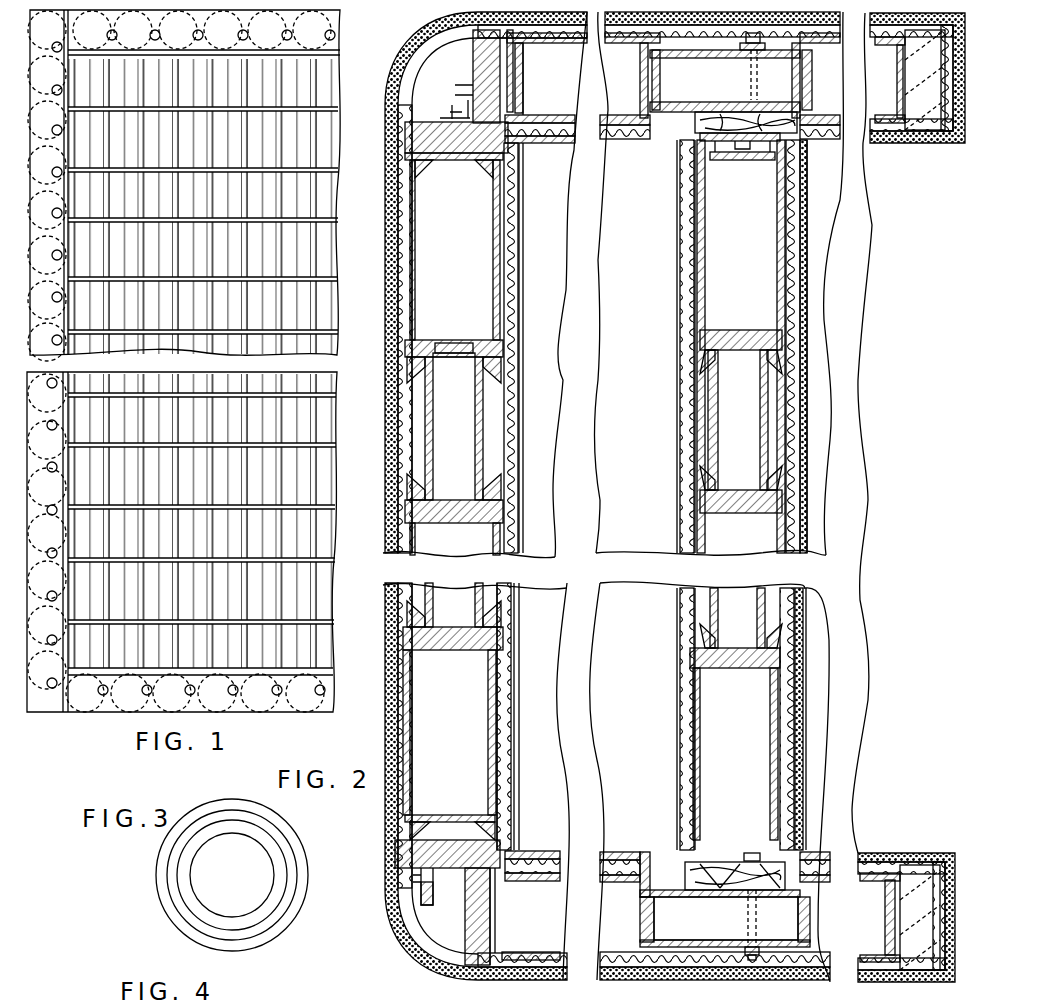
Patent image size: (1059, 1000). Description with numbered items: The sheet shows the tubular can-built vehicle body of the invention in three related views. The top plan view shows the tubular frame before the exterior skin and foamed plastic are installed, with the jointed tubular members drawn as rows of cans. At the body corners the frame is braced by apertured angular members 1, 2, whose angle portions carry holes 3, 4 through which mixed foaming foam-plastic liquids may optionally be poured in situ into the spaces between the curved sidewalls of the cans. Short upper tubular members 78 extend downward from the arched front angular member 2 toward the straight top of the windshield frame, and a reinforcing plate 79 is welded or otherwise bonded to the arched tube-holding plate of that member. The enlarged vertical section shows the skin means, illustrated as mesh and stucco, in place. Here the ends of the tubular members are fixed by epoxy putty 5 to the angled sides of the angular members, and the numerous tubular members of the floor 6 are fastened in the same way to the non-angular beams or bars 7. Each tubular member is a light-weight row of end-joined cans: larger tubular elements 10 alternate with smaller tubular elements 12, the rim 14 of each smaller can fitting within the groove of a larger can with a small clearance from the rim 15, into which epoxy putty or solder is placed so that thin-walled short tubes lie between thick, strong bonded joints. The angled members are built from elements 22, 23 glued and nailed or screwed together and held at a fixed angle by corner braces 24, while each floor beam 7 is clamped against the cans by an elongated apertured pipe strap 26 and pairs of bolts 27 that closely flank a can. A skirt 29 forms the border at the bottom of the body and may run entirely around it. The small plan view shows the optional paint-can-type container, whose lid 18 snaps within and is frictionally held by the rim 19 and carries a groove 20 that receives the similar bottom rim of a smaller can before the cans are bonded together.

In FIG. 1, the angular member 1 is at (340, 20).
In FIG. 1, the angular member 2 is at (32, 415).
In FIG. 1, the hole 3 is at (62, 255).
In FIG. 1, the hole 4 is at (142, 684).
In FIG. 1, the short upper tubular member 78 is at (90, 5).
In FIG. 1, the reinforcing plate 79 is at (64, 318).
In FIG. 2, the epoxy putty 5 is at (432, 830).
In FIG. 2, the floor 6 is at (662, 525).
In FIG. 2, the beam 7 is at (733, 148).
In FIG. 2, the tubular element 10 is at (464, 268).
In FIG. 2, the tubular element 12 is at (464, 441).
In FIG. 2, the rim 14 is at (443, 349).
In FIG. 2, the rim 15 is at (502, 354).
In FIG. 2, the angle side 22 is at (490, 913).
In FIG. 2, the angle side 23 is at (500, 855).
In FIG. 2, the corner brace 24 is at (444, 892).
In FIG. 2, the pipe strap 26 is at (724, 948).
In FIG. 2, the bolt 27 is at (752, 904).
In FIG. 2, the skirt 29 is at (893, 148).
In FIG. 3, the lid 18 is at (244, 898).
In FIG. 3, the rim 19 is at (162, 876).
In FIG. 3, the groove 20 is at (193, 849).